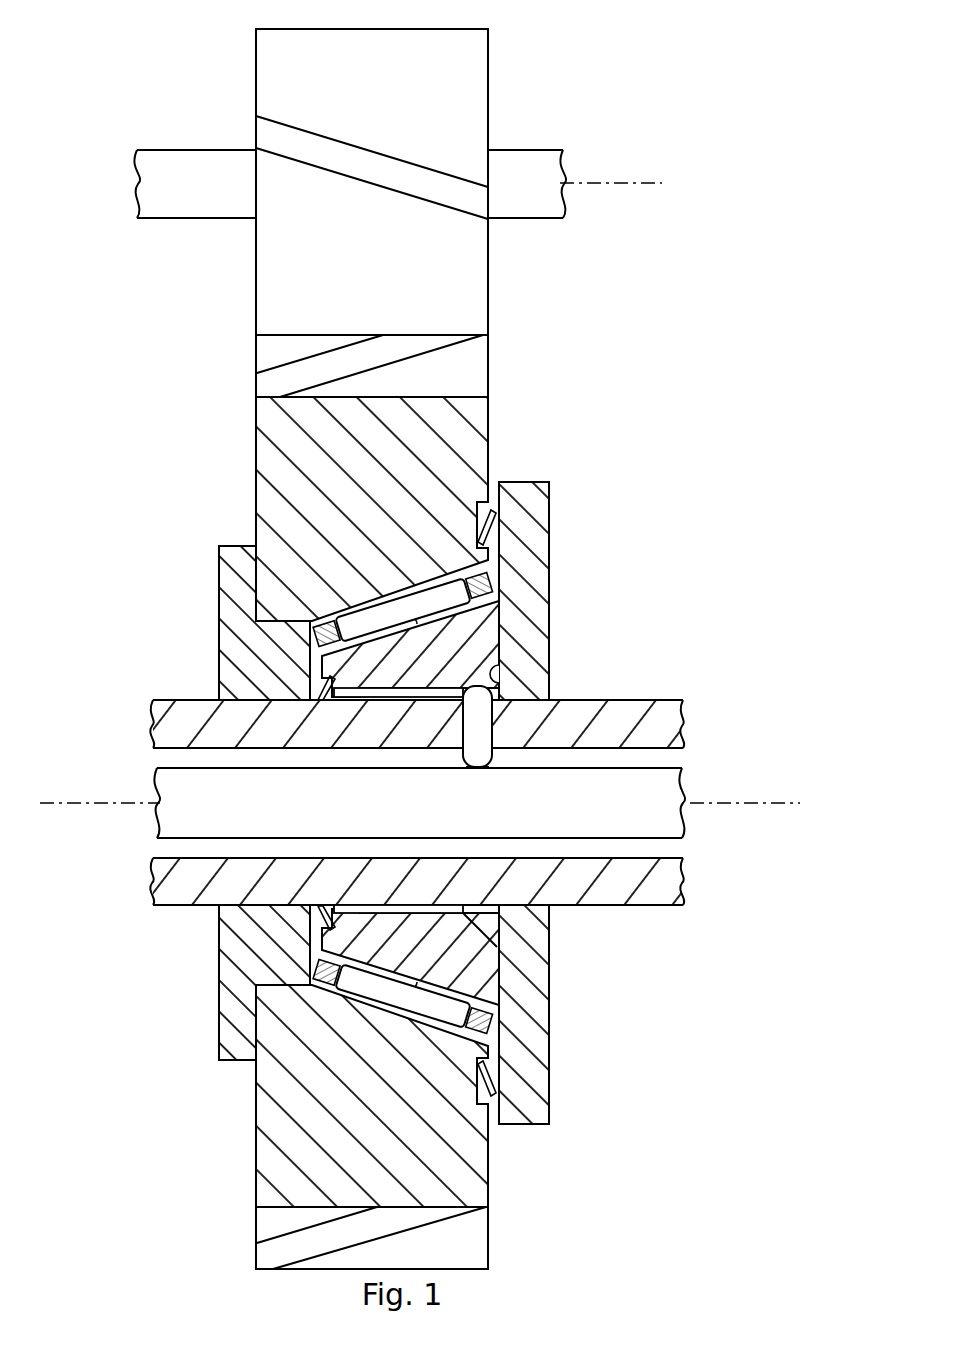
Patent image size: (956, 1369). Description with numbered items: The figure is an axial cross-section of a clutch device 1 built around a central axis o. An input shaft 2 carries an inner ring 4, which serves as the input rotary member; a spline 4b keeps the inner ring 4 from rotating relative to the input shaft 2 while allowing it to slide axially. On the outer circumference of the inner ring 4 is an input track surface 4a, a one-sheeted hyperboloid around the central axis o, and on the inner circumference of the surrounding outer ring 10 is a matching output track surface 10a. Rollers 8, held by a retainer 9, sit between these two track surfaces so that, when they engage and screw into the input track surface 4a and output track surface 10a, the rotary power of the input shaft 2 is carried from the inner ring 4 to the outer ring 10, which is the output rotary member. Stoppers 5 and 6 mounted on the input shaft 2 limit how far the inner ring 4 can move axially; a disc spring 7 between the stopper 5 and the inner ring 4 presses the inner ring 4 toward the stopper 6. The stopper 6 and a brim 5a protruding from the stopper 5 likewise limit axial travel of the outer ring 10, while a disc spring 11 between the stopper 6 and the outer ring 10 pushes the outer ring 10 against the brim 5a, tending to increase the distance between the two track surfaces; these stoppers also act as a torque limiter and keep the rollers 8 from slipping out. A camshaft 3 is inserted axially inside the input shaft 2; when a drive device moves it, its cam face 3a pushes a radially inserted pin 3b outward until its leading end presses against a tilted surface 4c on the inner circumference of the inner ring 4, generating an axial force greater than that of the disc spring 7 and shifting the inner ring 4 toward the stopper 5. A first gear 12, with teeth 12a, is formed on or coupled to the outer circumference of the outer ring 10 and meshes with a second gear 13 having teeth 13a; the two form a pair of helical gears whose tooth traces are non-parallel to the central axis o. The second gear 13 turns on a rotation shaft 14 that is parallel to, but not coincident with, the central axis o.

The clutch device 1 is at (714, 288).
The input shaft 2 is at (650, 712).
The camshaft 3 is at (658, 780).
The cam face 3a is at (493, 760).
The pin 3b is at (470, 768).
The inner ring 4 is at (490, 641).
The input track surface 4a is at (418, 632).
The spline 4b is at (388, 699).
The tilted surface 4c is at (500, 678).
The stopper 5 is at (232, 641).
The brim 5a is at (232, 578).
The stopper 6 is at (540, 550).
The disc spring 7 is at (327, 705).
The rollers 8 is at (417, 595).
The retainer 9 is at (470, 573).
The outer ring 10 is at (478, 423).
The output track surface 10a is at (378, 606).
The disc spring 11 is at (494, 510).
The first gear 12 is at (488, 370).
The teeth 12a is at (417, 352).
The second gear 13 is at (270, 278).
The teeth 13a is at (378, 163).
The rotation shaft 14 is at (170, 160).
The central axis o is at (773, 803).